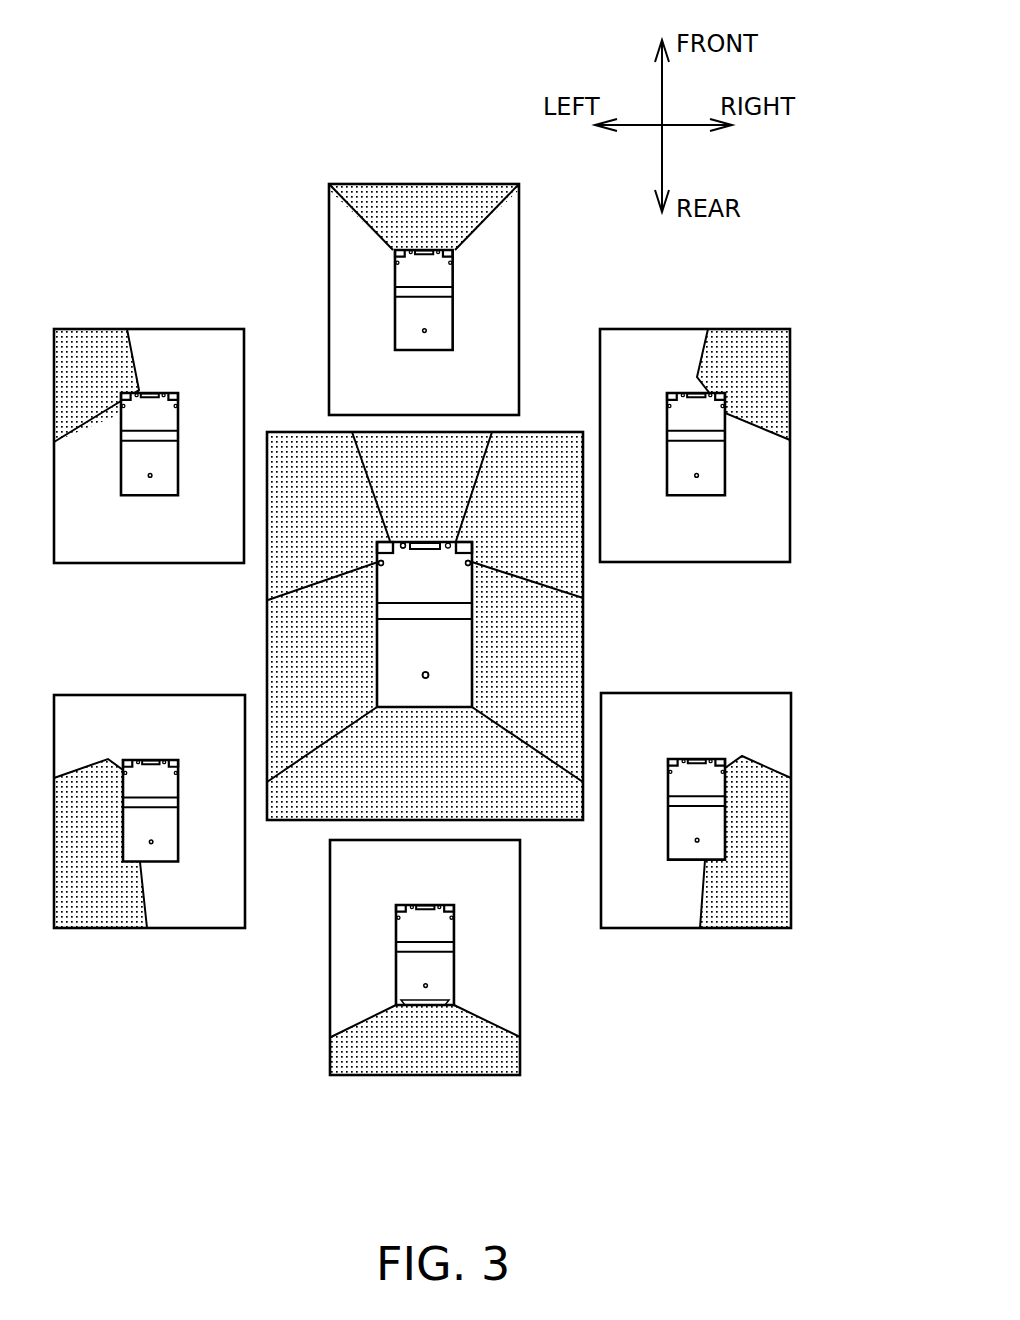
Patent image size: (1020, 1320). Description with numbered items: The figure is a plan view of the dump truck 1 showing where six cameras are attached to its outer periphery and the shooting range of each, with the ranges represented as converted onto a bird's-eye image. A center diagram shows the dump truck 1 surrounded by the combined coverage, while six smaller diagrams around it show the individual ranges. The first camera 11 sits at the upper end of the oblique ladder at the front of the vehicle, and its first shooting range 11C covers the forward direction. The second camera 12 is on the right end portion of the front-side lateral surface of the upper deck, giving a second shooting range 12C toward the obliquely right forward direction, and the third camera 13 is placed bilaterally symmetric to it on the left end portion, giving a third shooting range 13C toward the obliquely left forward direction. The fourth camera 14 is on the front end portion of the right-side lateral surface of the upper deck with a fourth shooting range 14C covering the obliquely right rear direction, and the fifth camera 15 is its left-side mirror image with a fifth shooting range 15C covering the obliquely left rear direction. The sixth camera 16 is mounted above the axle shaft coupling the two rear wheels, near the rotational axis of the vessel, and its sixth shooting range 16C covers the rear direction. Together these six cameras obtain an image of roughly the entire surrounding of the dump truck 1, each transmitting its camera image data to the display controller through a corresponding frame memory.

The dump truck 1 is at (434, 597).
The first camera 11 is at (402, 541).
The second camera 12 is at (473, 546).
The third camera 13 is at (377, 543).
The fourth camera 14 is at (472, 566).
The fifth camera 15 is at (378, 564).
The sixth camera 16 is at (427, 678).
The first shooting range 11C is at (426, 200).
The second shooting range 12C is at (752, 355).
The third shooting range 13C is at (88, 355).
The fourth shooting range 14C is at (753, 913).
The fifth shooting range 15C is at (100, 913).
The sixth shooting range 16C is at (428, 1060).